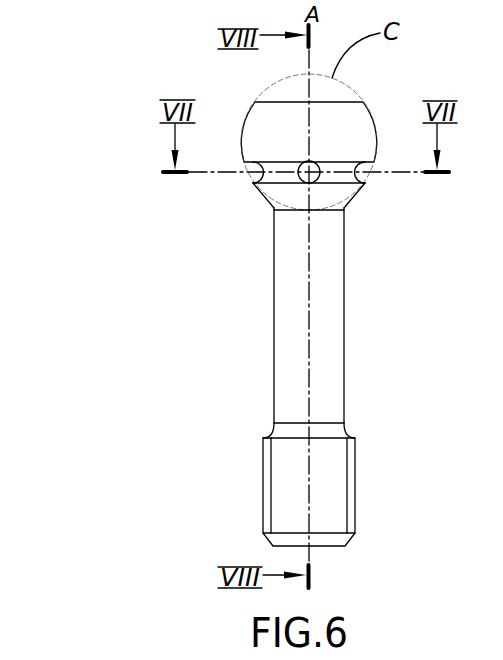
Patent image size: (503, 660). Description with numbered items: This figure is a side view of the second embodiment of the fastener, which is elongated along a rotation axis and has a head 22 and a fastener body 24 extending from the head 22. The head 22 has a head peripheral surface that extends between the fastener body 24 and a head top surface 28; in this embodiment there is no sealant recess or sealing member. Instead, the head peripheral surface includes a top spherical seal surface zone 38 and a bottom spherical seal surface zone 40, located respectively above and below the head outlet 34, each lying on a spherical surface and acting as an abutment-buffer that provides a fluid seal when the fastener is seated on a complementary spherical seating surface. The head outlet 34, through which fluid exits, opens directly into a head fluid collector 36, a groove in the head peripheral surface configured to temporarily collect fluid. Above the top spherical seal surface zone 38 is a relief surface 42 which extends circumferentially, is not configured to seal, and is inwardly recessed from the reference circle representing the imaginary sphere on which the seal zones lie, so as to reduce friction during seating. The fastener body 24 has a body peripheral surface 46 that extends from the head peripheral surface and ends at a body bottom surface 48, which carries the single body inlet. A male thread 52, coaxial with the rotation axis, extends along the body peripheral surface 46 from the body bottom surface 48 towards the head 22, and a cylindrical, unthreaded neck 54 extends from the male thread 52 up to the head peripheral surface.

The head 22 is at (122, 147).
The fastener body 24 is at (183, 331).
The head top surface 28 is at (60, 659).
The head outlet 34 is at (316, 163).
The head fluid collector 36 is at (273, 212).
The top spherical seal surface zone 38 is at (243, 160).
The bottom spherical seal surface zone 40 is at (258, 188).
The relief surface 42 is at (243, 158).
The body peripheral surface 46 is at (250, 350).
The body bottom surface 48 is at (323, 547).
The male thread 52 is at (267, 487).
The neck 54 is at (273, 378).